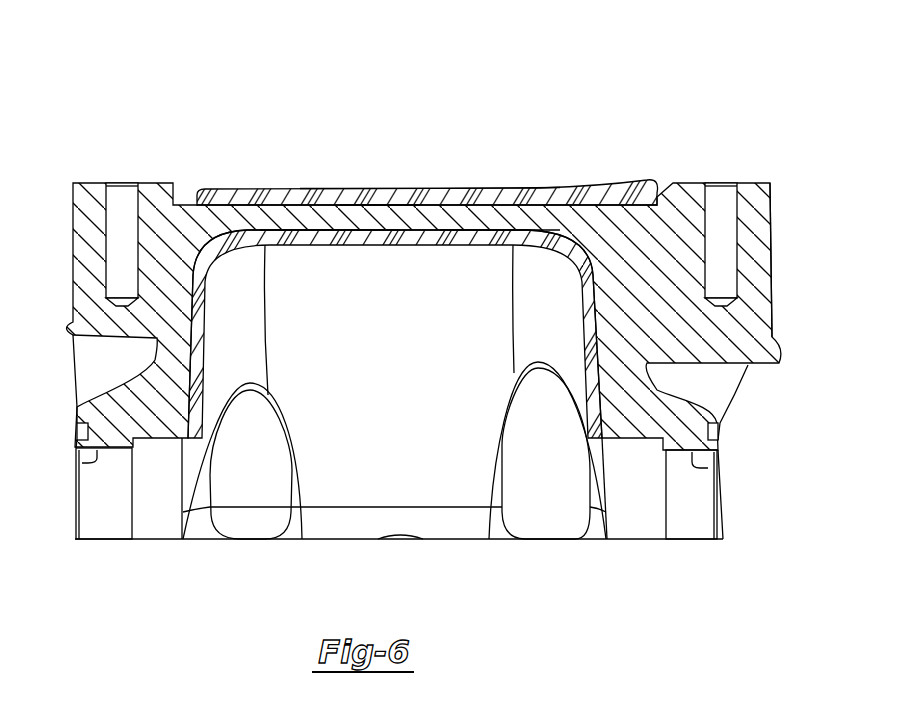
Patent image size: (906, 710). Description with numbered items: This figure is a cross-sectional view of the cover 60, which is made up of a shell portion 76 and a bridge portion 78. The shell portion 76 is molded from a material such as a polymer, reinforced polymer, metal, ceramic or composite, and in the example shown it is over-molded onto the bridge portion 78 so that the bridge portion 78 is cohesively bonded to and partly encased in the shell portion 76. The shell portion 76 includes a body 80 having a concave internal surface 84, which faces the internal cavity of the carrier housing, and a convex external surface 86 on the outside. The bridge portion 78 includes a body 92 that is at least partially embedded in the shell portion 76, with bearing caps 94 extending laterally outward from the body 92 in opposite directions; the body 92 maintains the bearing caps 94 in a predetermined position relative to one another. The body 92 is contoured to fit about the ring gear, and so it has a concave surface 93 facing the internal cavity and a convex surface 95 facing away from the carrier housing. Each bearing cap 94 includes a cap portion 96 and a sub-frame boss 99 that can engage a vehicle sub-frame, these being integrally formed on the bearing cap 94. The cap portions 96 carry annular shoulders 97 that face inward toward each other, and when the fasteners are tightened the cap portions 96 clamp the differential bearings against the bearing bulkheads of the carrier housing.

The cover 60 is at (552, 80).
The shell portion 76 is at (333, 180).
The bridge portion 78 is at (780, 218).
The body 80 is at (290, 188).
The concave internal surface 84 is at (393, 246).
The convex external surface 86 is at (447, 189).
The body 92 is at (498, 218).
The concave surface 93 is at (317, 232).
The bearing caps 94 is at (105, 410).
The convex surface 95 is at (378, 205).
The cap portion 96 is at (85, 462).
The annular shoulders 97 is at (135, 445).
The sub-frame boss 99 is at (82, 253).